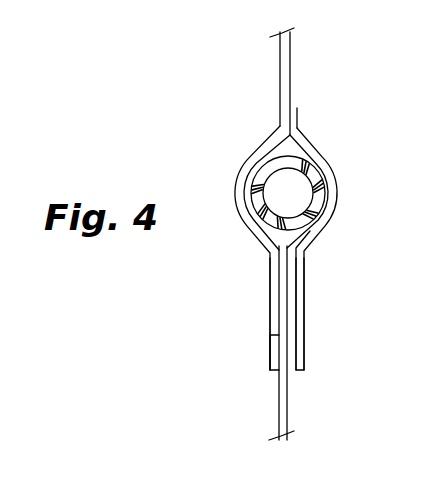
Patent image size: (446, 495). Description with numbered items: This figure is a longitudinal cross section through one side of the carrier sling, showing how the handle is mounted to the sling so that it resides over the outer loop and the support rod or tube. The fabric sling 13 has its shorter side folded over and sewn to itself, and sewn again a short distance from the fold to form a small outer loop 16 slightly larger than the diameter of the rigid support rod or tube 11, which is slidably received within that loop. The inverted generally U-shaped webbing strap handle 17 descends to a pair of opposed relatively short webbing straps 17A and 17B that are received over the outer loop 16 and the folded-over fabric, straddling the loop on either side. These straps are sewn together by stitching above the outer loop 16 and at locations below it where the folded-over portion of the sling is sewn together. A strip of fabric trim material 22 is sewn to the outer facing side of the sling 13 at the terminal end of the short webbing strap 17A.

The webbing strap handle 17 is at (292, 67).
The small outer loop 16 is at (283, 153).
The support rod or tube 11 is at (317, 182).
The short webbing strap 17A is at (270, 276).
The short webbing strap 17B is at (305, 290).
The strip of fabric trim material 22 is at (270, 352).
The fabric sling 13 is at (289, 415).